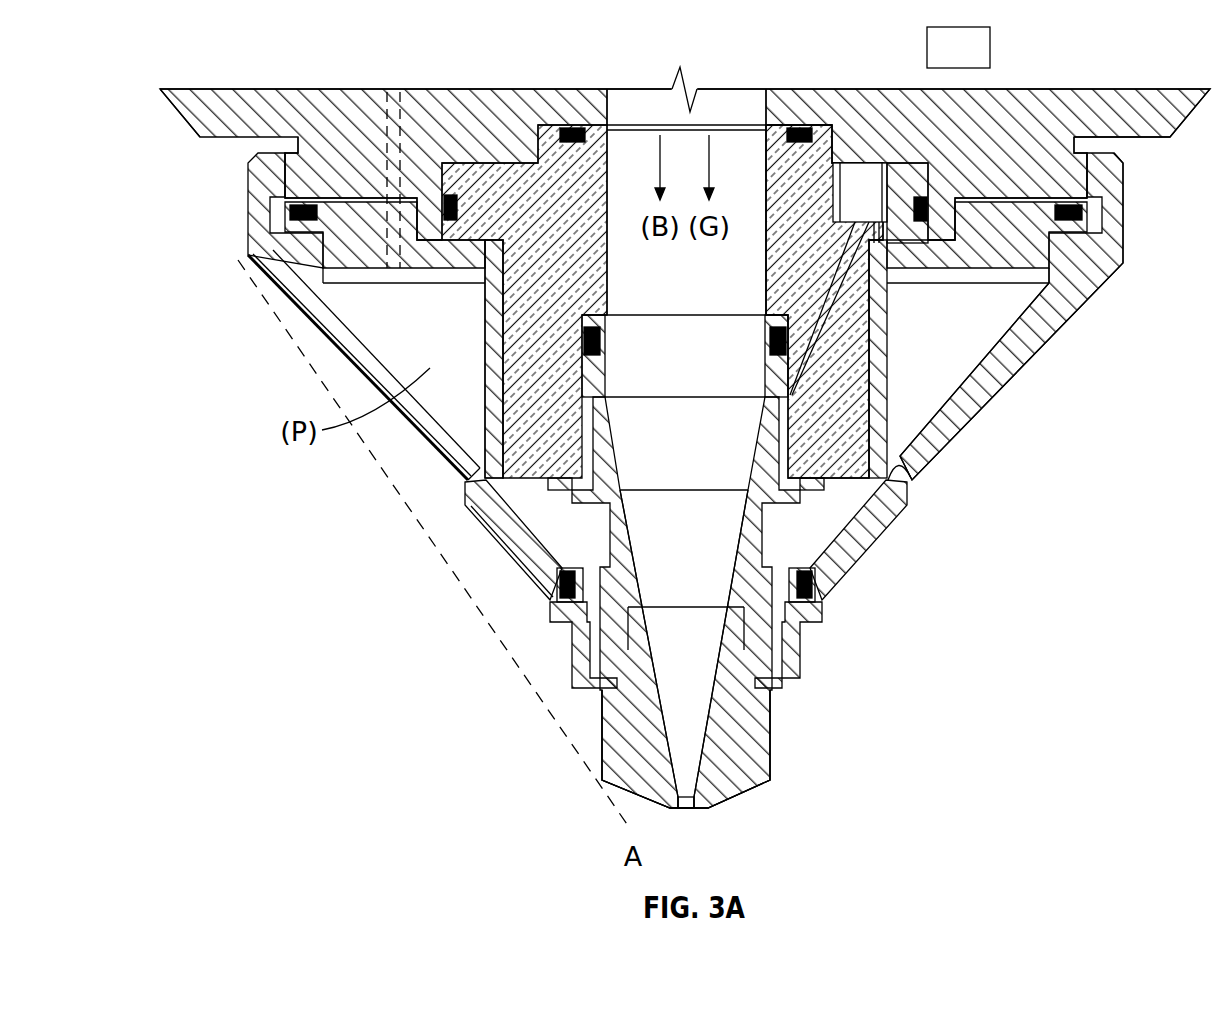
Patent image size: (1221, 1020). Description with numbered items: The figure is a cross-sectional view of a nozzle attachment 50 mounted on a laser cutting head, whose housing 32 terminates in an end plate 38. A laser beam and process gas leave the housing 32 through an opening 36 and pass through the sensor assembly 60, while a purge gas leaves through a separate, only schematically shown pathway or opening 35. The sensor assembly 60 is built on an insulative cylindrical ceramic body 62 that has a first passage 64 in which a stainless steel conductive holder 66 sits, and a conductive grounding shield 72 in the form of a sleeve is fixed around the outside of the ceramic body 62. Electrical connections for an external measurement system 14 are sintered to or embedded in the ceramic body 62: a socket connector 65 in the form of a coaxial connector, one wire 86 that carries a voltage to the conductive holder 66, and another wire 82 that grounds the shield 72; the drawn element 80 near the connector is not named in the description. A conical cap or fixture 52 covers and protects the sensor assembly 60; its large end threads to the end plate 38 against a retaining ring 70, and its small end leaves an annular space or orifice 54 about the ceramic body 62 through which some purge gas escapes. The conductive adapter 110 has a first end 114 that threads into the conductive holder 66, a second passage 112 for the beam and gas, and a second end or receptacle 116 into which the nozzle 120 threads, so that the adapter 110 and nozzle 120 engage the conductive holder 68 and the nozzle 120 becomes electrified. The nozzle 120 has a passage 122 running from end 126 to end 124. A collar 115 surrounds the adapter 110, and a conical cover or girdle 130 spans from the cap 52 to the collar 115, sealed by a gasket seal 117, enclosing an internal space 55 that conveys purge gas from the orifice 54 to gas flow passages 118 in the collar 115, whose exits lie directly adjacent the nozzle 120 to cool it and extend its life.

The external measurement system 14 is at (972, 61).
The housing 32 is at (220, 138).
The pathway or other opening 35 is at (428, 103).
The opening 36 is at (761, 97).
The end plate 38 is at (1125, 163).
The nozzle attachment 50 is at (966, 578).
The cap or fixture 52 is at (1073, 322).
The orifice or annular space 54 is at (925, 465).
The internal space 55 is at (376, 325).
The sensor assembly 60 is at (801, 98).
The ceramic body 62 is at (498, 164).
The first passage 64 is at (608, 160).
The socket connector 65 is at (884, 168).
The conductive holder 66 is at (870, 522).
The conductive holder 68 is at (628, 320).
The retaining ring 70 is at (352, 201).
The conductive grounding shield 72 is at (483, 297).
The flow passage 80 is at (858, 163).
The wire 82 is at (932, 203).
The wire 86 is at (832, 297).
The conductive adapter 110 is at (832, 580).
The second passage 112 is at (665, 455).
The first end 114 is at (786, 436).
The collar 115 is at (571, 638).
The second end or receptacle 116 is at (744, 620).
The gasket seal 117 is at (550, 584).
The gas flow passages 118 is at (645, 650).
The nozzle 120 is at (602, 767).
The passage 122 is at (702, 731).
The end 124 is at (688, 810).
The end 126 is at (744, 648).
The cover or girdle 130 is at (472, 514).